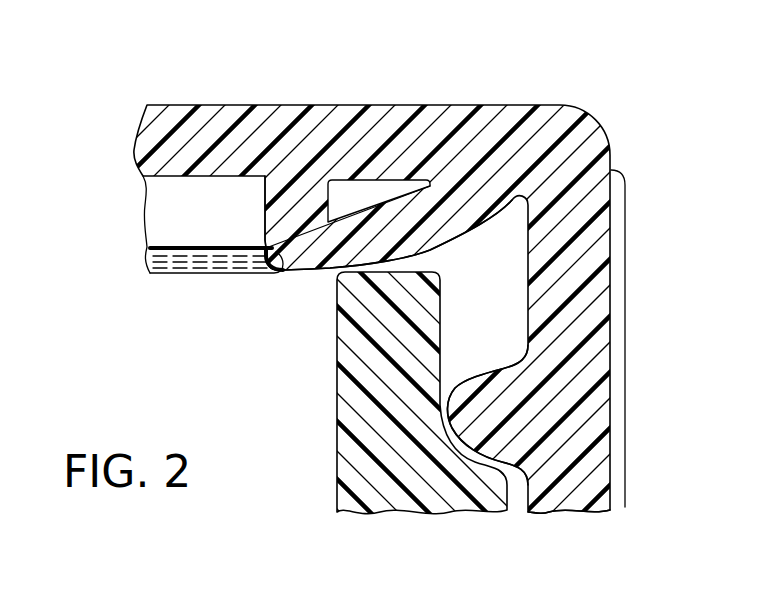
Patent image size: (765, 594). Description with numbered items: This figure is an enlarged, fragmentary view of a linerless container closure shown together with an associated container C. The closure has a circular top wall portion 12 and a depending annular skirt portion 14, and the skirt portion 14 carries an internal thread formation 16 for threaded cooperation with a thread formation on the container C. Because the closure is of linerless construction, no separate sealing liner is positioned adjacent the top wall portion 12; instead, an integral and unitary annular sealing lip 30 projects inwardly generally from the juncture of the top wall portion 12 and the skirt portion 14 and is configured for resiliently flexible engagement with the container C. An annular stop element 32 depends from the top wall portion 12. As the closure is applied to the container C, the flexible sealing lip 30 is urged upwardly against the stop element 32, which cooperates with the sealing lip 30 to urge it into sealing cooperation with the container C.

The top wall portion 12 is at (240, 104).
The skirt portion 14 is at (554, 504).
The internal thread formation 16 is at (487, 373).
The annular sealing lip 30 is at (297, 269).
The annular stop element 32 is at (270, 232).
The associated container C is at (337, 403).